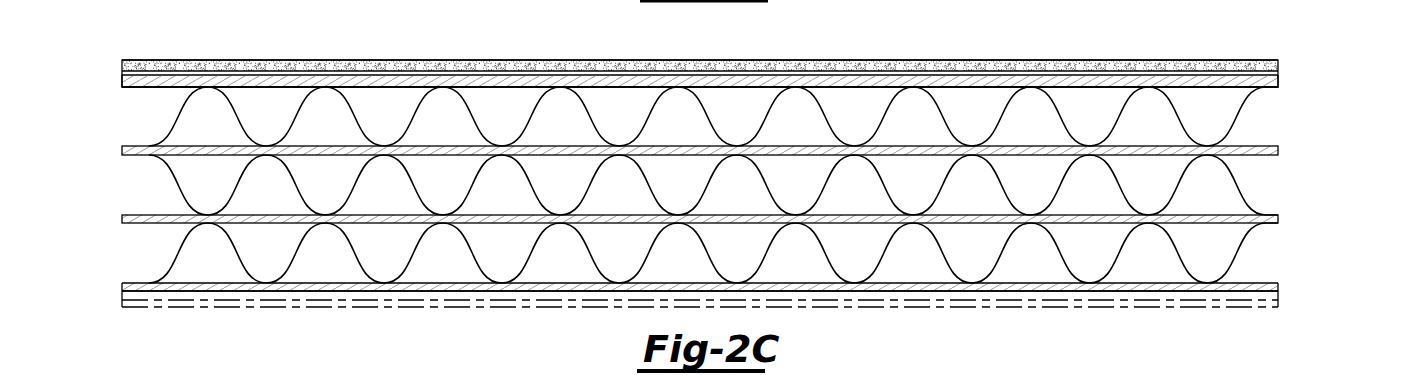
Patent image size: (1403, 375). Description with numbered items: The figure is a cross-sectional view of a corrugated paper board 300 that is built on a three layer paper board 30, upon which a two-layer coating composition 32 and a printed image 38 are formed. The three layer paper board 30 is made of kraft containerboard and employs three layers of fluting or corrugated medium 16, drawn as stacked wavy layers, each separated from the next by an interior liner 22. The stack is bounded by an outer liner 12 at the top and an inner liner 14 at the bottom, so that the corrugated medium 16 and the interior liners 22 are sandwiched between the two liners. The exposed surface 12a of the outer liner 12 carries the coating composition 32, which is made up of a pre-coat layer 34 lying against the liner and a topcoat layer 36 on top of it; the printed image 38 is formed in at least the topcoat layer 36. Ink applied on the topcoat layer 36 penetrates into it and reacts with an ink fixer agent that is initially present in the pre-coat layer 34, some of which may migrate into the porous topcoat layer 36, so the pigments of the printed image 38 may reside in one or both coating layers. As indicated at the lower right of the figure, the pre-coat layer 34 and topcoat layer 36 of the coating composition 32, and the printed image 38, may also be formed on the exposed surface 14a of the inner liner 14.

The corrugated paper board 300 is at (1300, 26).
The three layer paper board 30 is at (725, 185).
The two-layer coating composition 32 is at (702, 158).
The outer liner 12 is at (121, 80).
The exposed surface of the outer liner 12a is at (382, 76).
The inner liner 14 is at (670, 324).
The exposed surface of the inner liner 14a is at (323, 292).
The fluting or corrugated medium 16 is at (176, 120).
The interior liner 22 is at (121, 150).
The pre-coat layer 34 is at (121, 72).
The topcoat layer 36 is at (121, 67).
The printed image 38 is at (237, 61).